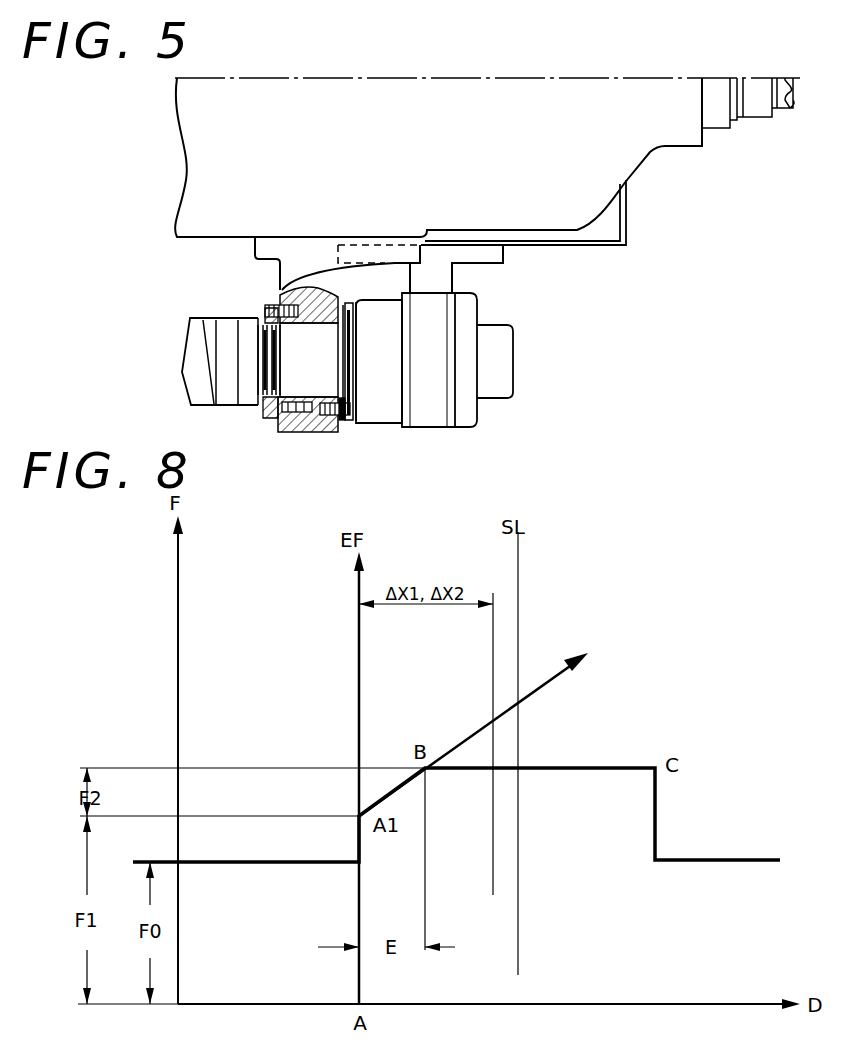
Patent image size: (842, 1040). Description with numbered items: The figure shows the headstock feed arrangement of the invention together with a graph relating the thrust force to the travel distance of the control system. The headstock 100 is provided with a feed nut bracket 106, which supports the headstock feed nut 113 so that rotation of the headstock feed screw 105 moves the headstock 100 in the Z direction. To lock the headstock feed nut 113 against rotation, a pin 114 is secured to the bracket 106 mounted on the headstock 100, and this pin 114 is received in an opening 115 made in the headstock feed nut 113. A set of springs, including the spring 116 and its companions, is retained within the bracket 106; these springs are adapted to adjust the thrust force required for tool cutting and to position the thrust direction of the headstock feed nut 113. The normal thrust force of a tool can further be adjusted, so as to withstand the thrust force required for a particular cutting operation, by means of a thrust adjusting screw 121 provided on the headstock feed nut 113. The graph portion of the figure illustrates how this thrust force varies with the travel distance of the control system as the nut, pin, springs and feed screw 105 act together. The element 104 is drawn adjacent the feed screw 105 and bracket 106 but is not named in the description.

The headstock 100 is at (364, 95).
The solenoid / actuator assembly 104 is at (451, 428).
The headstock feed screw 105 is at (232, 402).
The feed nut bracket 106 is at (340, 432).
The headstock feed nut 113 is at (313, 330).
The pin 114 is at (348, 412).
The opening 115 is at (348, 420).
The spring 116 is at (297, 432).
The thrust adjusting screw 121 is at (271, 415).